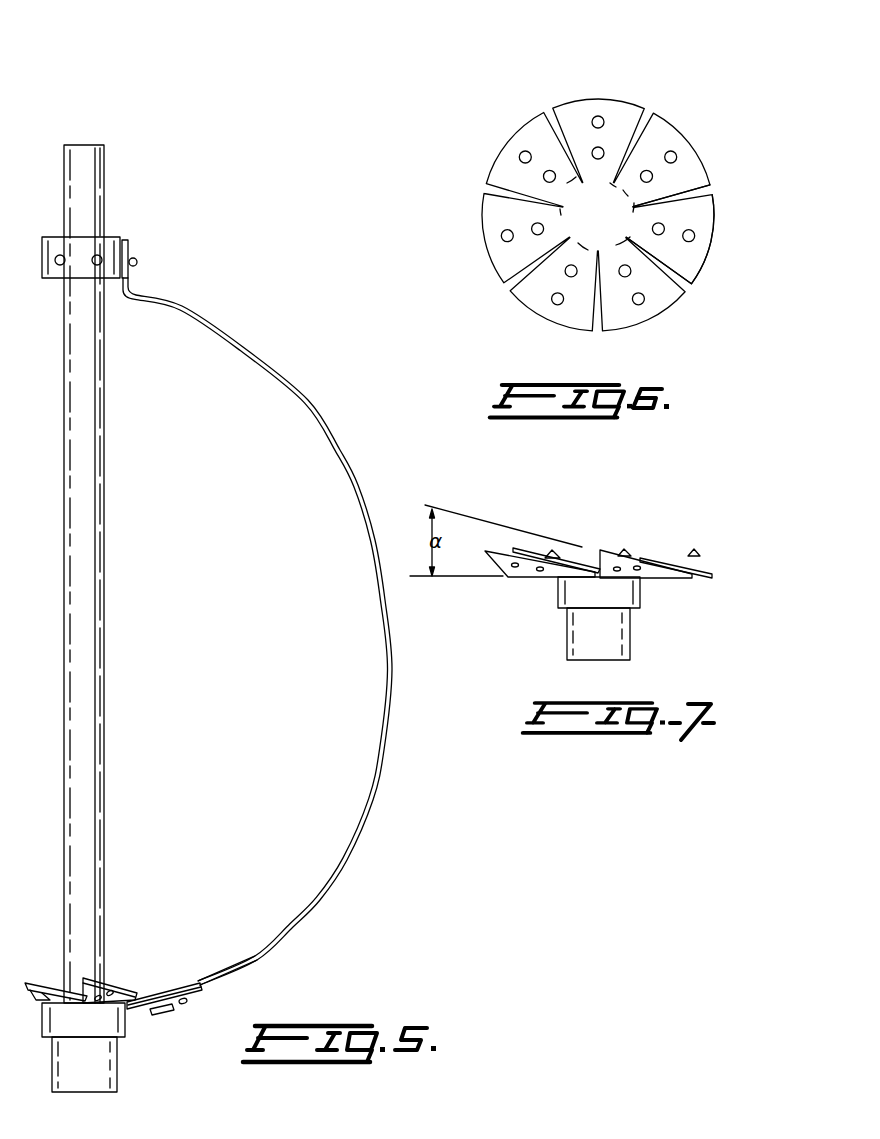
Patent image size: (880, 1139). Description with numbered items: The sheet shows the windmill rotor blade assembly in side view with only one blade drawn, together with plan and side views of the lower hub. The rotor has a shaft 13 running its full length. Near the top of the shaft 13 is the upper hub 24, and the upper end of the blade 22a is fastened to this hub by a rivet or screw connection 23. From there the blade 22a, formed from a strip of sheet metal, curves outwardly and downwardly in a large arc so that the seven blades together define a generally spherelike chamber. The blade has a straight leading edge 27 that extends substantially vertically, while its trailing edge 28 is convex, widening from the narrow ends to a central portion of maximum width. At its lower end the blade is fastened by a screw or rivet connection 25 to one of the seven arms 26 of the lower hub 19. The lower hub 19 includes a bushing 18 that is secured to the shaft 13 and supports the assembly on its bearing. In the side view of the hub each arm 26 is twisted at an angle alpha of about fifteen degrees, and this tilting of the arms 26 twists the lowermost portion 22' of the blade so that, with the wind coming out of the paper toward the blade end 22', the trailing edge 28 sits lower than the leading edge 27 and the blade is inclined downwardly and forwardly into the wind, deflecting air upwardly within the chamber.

In FIG. 5, the shaft 13 is at (90, 545).
In FIG. 5, the upper hub 24 is at (103, 246).
In FIG. 5, the rivet or screw connection 23 is at (138, 258).
In FIG. 5, the blade 22a is at (389, 622).
In FIG. 5, the leading edge 27 is at (255, 958).
In FIG. 5, the lowermost portion of the blade 22' is at (213, 989).
In FIG. 5, the trailing edge 28 is at (184, 1006).
In FIG. 5, the screw or rivet connection 25 is at (162, 1014).
In FIG. 5, the arm 26 is at (195, 988).
In FIG. 6, the arm 26 is at (730, 292).
In FIG. 7, the arm 26 is at (688, 568).
In FIG. 6, the lower hub 19 is at (535, 73).
In FIG. 7, the lower hub 19 is at (643, 523).
In FIG. 7, the bushing 18 is at (577, 632).